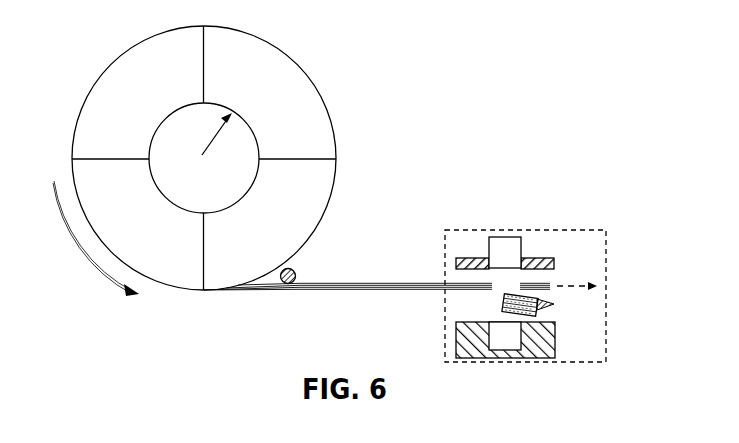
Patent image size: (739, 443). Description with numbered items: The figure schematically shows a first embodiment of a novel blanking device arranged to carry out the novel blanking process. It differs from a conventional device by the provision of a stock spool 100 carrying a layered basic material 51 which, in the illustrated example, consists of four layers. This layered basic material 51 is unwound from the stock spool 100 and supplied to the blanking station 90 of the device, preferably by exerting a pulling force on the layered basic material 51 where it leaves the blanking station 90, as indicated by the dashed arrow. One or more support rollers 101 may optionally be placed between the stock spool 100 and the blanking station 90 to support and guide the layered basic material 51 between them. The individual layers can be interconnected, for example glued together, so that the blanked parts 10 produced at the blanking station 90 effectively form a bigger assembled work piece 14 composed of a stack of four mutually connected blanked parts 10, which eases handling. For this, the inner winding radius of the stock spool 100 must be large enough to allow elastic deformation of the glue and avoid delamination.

The stock spool 100 is at (93, 103).
The support roller 101 is at (296, 270).
The layered basic material 51 is at (358, 293).
The blanking station 90 is at (518, 229).
The assembled work piece 14 is at (497, 294).
The blanked part 10 is at (557, 306).